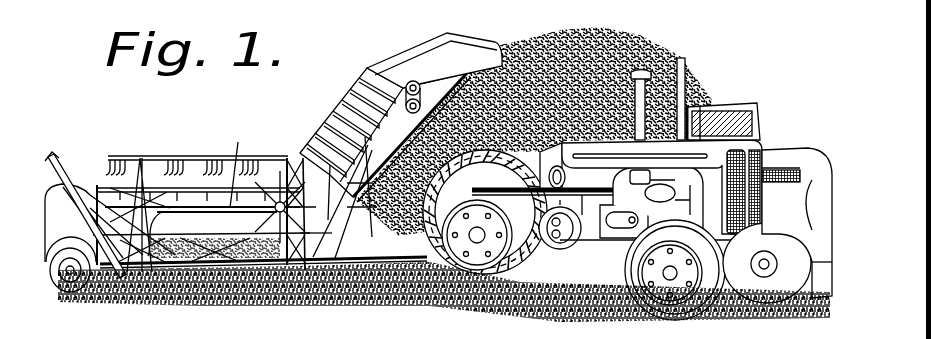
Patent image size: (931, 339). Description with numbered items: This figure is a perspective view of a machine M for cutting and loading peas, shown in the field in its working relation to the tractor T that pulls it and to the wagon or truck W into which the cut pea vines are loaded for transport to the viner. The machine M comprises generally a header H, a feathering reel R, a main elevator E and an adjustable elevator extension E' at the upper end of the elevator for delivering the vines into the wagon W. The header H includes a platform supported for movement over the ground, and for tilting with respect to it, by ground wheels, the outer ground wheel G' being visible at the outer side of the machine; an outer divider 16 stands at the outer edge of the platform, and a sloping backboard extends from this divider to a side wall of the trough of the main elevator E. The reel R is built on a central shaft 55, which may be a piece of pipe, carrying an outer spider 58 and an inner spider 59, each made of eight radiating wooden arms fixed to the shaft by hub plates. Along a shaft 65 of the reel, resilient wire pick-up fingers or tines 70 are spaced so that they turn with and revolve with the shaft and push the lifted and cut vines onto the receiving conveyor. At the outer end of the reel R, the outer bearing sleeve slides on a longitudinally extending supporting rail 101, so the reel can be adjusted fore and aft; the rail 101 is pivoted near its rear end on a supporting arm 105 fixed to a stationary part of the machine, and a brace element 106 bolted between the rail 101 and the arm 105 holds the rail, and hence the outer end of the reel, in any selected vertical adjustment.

The tractor T is at (740, 143).
The wagon or truck W is at (790, 148).
The main elevator E is at (384, 163).
The adjustable elevator extension E' is at (434, 67).
The feathering reel R is at (172, 154).
The shaft 65 is at (200, 164).
The pick-up fingers or tines 70 is at (186, 166).
The central shaft 55 is at (202, 166).
The outer spider 58 is at (140, 166).
The inner spider 59 is at (283, 163).
The outer divider 16 is at (100, 208).
The supporting rail 101 is at (97, 231).
The machine M is at (97, 183).
The outer ground wheel G' is at (69, 267).
The brace element 106 is at (73, 178).
The header H is at (102, 272).
The supporting arm 105 is at (51, 162).